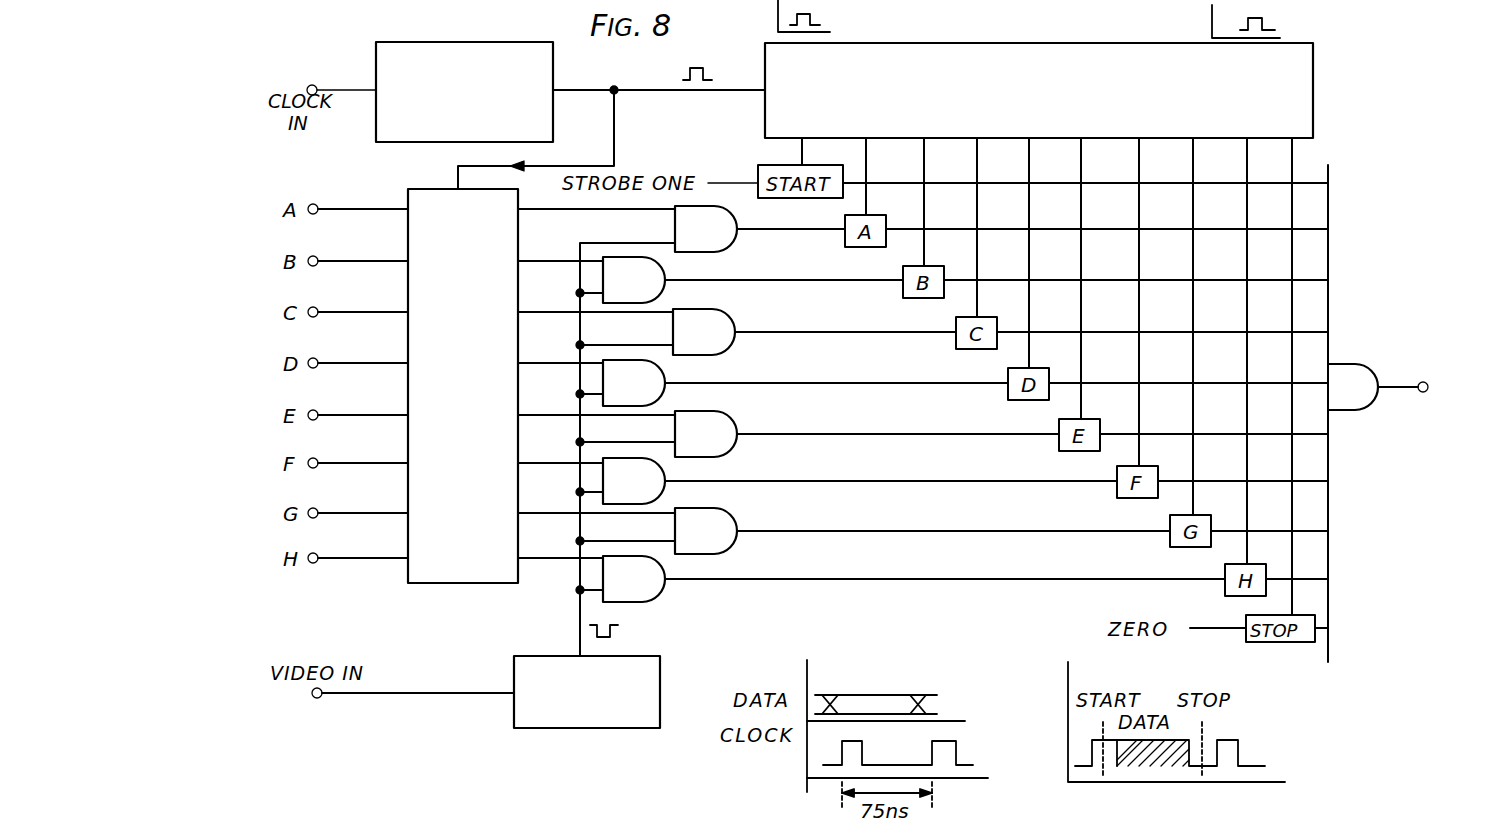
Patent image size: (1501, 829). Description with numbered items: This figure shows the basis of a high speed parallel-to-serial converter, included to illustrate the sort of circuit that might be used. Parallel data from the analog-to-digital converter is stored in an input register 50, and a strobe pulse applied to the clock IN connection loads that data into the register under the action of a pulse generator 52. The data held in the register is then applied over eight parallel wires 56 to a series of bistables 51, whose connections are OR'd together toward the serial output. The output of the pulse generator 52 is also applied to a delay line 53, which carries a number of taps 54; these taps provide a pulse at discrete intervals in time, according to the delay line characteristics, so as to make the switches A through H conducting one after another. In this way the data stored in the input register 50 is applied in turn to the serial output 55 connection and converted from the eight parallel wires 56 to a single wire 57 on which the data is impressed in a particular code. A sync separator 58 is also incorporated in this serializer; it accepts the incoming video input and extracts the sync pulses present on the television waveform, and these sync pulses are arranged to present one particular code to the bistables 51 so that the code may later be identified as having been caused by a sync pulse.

The input register 50 is at (405, 572).
The bistables 51 is at (645, 598).
The pulse generator 52 is at (391, 146).
The delay line 53 is at (1313, 93).
The taps 54 is at (1030, 137).
The serial output 55 is at (1428, 383).
The parallel wires 56 is at (556, 514).
The single wire 57 is at (1394, 380).
The sync separator 58 is at (512, 716).